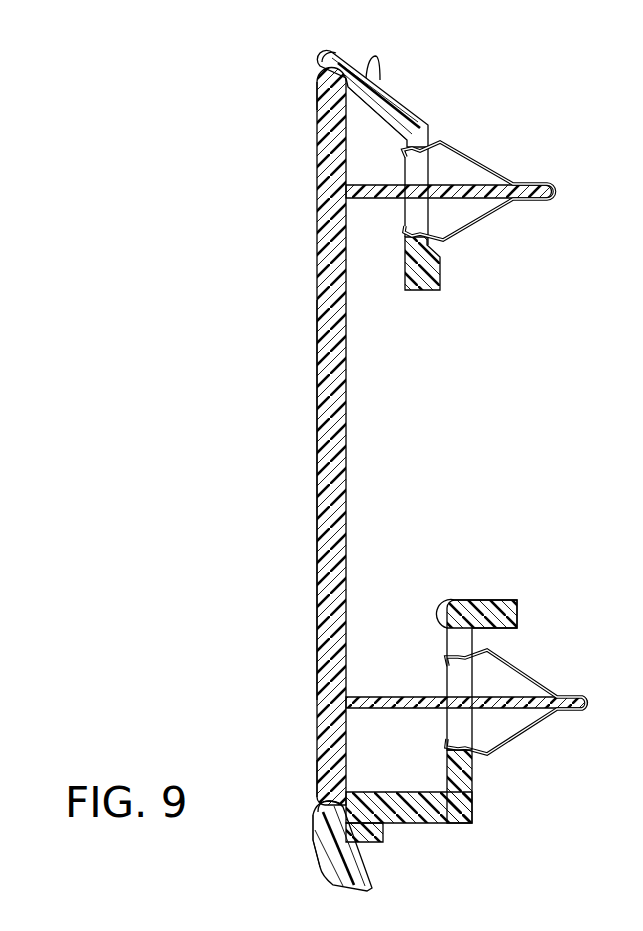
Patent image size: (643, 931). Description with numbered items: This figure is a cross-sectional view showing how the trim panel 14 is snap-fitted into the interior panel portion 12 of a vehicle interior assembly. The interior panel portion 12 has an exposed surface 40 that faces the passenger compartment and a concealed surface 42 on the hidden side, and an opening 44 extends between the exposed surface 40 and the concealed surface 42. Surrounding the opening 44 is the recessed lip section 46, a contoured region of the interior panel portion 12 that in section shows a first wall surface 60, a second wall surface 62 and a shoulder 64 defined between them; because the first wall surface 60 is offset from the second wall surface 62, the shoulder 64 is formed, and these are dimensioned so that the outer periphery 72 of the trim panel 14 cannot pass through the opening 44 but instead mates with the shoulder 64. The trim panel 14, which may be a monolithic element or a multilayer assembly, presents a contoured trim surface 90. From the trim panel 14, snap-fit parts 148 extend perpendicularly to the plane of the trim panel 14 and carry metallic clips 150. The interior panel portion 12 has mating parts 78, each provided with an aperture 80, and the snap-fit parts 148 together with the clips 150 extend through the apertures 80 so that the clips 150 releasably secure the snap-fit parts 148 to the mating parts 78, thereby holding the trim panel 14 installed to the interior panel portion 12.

The interior panel portion 12 is at (363, 418).
The trim panel 14 is at (332, 452).
The exposed surface 40 is at (309, 846).
The concealed surface 42 is at (445, 720).
The opening 44 is at (378, 122).
The recessed lip section 46 is at (415, 792).
The first wall surface 60 is at (317, 857).
The second wall surface 62 is at (362, 803).
The shoulder 64 is at (338, 99).
The outer periphery 72 is at (345, 53).
The mating parts 78 is at (418, 273).
The aperture 80 is at (413, 210).
The trim surface 90 is at (316, 519).
The snap-fit parts 148 is at (467, 197).
The metallic clips 150 is at (473, 160).